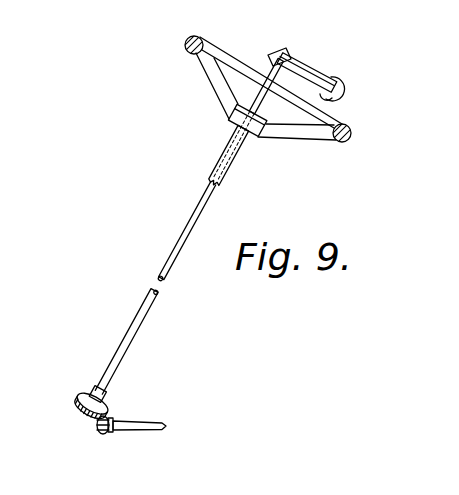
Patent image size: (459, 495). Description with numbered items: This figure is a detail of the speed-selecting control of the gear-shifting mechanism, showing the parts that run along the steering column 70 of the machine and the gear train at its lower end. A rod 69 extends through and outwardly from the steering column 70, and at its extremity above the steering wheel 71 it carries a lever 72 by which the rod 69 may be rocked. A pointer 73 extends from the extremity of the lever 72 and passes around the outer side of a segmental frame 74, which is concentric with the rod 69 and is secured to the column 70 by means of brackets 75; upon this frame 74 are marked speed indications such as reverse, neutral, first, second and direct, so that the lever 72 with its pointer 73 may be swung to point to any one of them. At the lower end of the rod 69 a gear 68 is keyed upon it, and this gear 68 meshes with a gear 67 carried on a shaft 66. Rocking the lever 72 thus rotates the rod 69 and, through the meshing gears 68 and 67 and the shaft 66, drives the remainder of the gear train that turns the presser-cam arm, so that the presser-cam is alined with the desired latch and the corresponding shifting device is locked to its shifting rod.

The shaft 66 is at (140, 420).
The gear 67 is at (105, 437).
The gear 68 is at (77, 402).
The rod 69 is at (153, 315).
The steering column 70 is at (240, 167).
The steering wheel 71 is at (352, 131).
The lever 72 is at (348, 96).
The pointer 73 is at (341, 80).
The segmental frame 74 is at (306, 66).
The brackets 75 is at (263, 66).